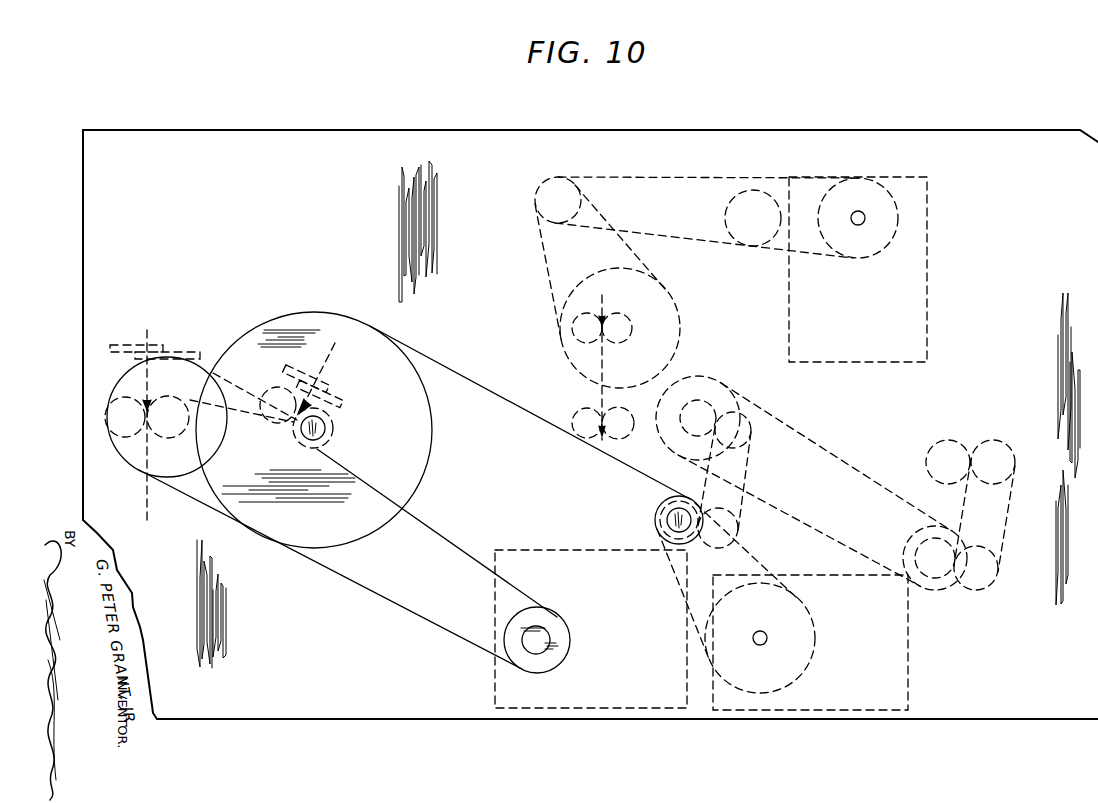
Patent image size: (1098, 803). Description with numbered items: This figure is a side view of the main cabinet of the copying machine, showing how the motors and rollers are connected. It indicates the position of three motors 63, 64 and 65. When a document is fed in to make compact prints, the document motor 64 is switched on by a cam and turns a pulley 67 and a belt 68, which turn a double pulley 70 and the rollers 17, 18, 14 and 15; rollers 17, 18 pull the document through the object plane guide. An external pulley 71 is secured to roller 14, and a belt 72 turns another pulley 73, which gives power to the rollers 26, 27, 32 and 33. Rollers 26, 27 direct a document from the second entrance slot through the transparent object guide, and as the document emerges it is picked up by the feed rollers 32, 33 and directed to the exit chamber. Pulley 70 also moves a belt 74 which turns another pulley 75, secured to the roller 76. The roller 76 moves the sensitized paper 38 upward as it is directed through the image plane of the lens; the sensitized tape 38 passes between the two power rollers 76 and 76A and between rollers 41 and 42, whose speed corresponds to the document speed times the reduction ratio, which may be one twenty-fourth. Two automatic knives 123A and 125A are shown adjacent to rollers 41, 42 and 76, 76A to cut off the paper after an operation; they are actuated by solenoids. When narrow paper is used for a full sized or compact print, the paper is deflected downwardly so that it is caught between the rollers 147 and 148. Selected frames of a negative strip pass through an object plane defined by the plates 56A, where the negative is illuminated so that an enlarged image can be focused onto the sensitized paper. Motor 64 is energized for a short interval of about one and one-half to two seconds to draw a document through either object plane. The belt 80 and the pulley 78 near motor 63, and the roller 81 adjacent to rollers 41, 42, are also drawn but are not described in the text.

The pulley 75 is at (343, 297).
The roller 81 is at (126, 374).
The roller 42 is at (105, 415).
The roller 41 is at (166, 440).
The knife 125A is at (161, 345).
The knife 123A is at (336, 385).
The sensitized tape 38 is at (339, 344).
The power roller 76A is at (271, 388).
The power roller 76 is at (333, 428).
The belt 74 is at (468, 352).
The belt 80 is at (455, 519).
The print paper motor pulley 78 is at (553, 616).
The motor 63 is at (495, 680).
The double pulley 70 is at (656, 524).
The roller 18 is at (657, 504).
The roller 17 is at (740, 532).
The belt 68 is at (750, 558).
The roller 15 is at (755, 437).
The external pulley 71 is at (722, 380).
The roller 14 is at (665, 446).
The belt 72 is at (848, 456).
The roller 148 is at (641, 305).
The roller 147 is at (572, 323).
The plates 56A is at (598, 392).
The motor 65 is at (927, 258).
The roller 27 is at (949, 442).
The roller 26 is at (1006, 447).
The feed roller 33 is at (907, 545).
The feed roller 32 is at (998, 572).
The pulley 73 is at (928, 590).
The document motor 64 is at (908, 655).
The pulley 67 is at (812, 658).